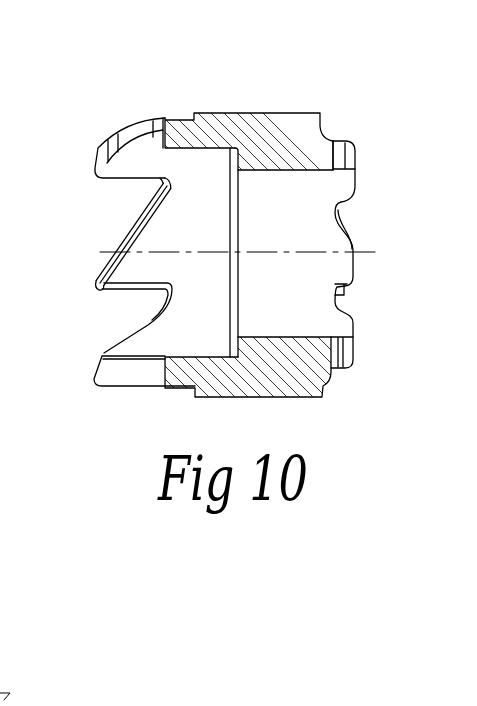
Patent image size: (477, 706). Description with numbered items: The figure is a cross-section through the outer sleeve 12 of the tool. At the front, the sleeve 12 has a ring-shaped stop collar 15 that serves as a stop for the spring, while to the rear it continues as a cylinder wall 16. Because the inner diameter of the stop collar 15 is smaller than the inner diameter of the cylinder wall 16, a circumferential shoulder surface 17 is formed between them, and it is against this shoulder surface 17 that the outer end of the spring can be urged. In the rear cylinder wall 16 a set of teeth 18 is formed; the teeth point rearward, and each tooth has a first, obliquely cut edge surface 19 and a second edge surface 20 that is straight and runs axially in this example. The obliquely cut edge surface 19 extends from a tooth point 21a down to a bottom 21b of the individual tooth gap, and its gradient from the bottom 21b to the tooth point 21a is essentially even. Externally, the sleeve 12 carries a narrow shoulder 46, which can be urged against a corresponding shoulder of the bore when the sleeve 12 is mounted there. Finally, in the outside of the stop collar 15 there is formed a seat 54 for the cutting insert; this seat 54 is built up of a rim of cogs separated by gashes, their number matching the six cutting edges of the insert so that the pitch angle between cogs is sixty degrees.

The outer sleeve 12 is at (238, 228).
The stop collar 15 is at (284, 141).
The cylinder wall 16 is at (180, 137).
The shoulder surface 17 is at (223, 166).
The set of teeth 18 is at (102, 131).
The obliquely cut edge surface 19 is at (140, 228).
The second edge surface 20 is at (123, 290).
The tooth point 21a is at (99, 290).
The bottom of the tooth gap 21b is at (157, 204).
The external narrow shoulder 46 is at (195, 395).
The seat 54 is at (345, 141).